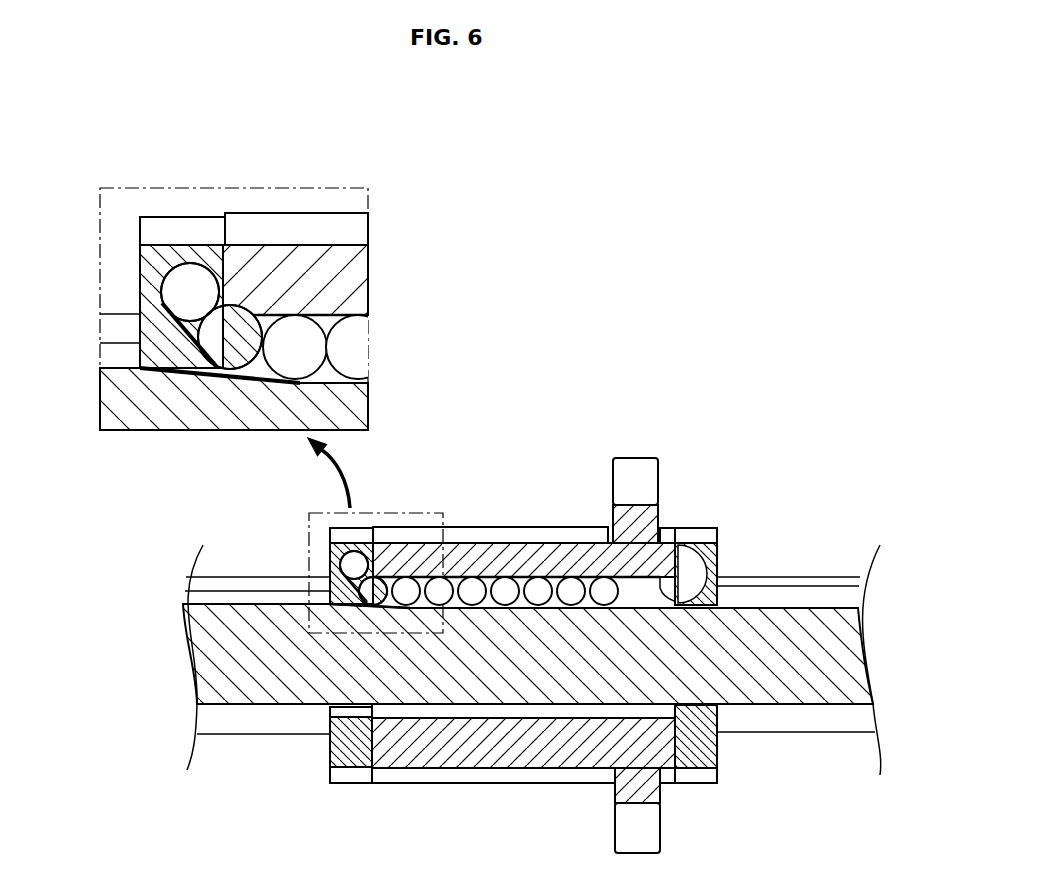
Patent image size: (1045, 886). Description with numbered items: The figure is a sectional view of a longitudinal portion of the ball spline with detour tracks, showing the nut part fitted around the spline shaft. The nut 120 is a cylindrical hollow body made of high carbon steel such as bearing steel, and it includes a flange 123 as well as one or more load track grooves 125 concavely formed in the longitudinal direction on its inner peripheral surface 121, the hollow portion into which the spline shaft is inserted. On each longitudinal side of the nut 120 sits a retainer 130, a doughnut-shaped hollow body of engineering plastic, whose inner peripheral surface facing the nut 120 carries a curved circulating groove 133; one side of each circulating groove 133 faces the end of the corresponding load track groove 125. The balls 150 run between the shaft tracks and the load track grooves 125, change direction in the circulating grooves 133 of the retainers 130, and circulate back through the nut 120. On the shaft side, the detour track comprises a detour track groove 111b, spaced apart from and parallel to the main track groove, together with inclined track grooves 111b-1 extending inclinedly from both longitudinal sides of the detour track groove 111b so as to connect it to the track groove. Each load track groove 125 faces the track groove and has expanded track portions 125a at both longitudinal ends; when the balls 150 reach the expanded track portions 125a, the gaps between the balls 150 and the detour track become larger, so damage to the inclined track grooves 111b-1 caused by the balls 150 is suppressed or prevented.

The detour track groove 111b is at (375, 604).
The inclined track groove 111b-1 is at (218, 375).
The nut 120 is at (355, 232).
The inner peripheral surface 121 is at (515, 706).
The flange 123 is at (637, 462).
The load track groove 125 is at (590, 575).
The expanded track portion 125a is at (398, 560).
The retainer 130 is at (338, 517).
The circulating groove 133 is at (330, 556).
The ball 150 is at (504, 590).